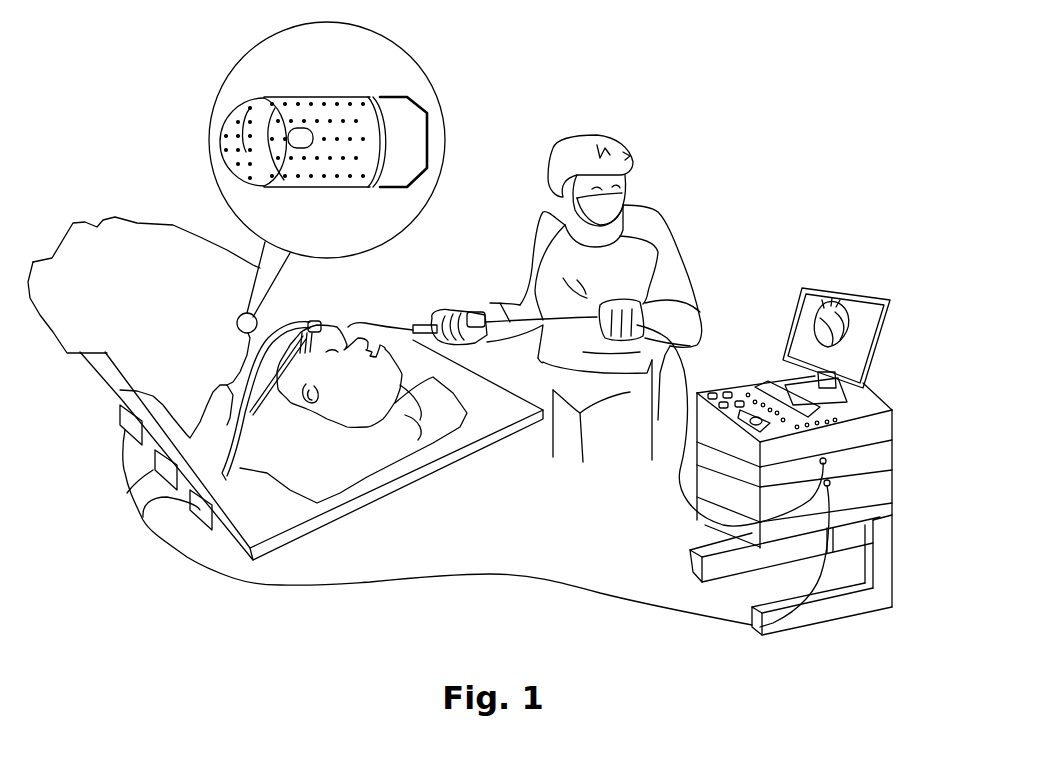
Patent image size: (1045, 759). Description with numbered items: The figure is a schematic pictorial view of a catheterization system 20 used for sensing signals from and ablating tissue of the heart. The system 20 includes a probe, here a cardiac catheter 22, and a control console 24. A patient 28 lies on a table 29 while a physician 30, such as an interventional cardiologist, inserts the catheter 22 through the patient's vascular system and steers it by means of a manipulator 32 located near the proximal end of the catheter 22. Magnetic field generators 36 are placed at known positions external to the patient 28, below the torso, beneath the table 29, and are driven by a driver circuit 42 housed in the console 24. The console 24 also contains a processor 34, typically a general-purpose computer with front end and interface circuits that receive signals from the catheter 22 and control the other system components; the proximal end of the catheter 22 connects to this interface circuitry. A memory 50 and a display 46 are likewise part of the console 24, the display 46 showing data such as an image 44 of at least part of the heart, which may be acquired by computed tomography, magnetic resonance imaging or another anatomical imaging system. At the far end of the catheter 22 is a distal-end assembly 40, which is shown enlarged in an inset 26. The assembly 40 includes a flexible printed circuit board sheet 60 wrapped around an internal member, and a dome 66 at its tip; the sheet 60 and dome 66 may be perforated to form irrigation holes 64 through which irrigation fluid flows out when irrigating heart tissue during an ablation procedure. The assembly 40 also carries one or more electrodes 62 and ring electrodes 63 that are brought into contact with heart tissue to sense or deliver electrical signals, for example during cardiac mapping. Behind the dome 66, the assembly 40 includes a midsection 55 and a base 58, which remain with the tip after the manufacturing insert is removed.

The catheterization system 20 is at (802, 153).
The cardiac catheter 22 is at (406, 322).
The control console 24 is at (819, 444).
The inset 26 is at (427, 73).
The patient 28 is at (327, 445).
The table 29 is at (400, 480).
The physician 30 is at (557, 170).
The manipulator 32 is at (497, 306).
The processor 34 is at (888, 438).
The magnetic field generators 36 is at (130, 425).
The distal-end assembly 40 is at (324, 123).
The driver circuit 42 is at (888, 470).
The image 44 is at (813, 322).
The display 46 is at (862, 297).
The memory 50 is at (888, 503).
The midsection 55 is at (313, 113).
The base 58 is at (414, 108).
The flexible printed circuit board sheet 60 is at (343, 97).
The electrodes 62 is at (300, 127).
The ring electrodes 63 is at (371, 97).
The irrigation holes 64 is at (267, 97).
The dome 66 is at (227, 175).